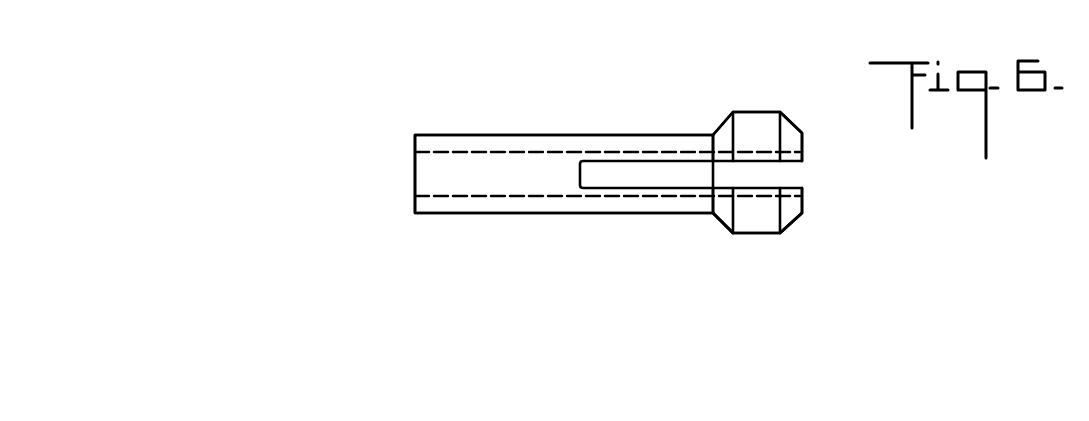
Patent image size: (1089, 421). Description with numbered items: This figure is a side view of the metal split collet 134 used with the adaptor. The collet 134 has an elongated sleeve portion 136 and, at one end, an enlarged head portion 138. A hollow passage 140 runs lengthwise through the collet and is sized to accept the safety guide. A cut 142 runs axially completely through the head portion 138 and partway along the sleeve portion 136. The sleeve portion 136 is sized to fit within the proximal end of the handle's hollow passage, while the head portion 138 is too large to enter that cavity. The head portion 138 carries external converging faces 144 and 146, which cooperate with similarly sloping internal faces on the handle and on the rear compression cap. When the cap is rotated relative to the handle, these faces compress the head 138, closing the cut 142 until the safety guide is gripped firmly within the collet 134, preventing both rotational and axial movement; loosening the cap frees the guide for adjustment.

The split collet 134 is at (566, 124).
The sleeve portion 136 is at (508, 213).
The head portion 138 is at (742, 233).
The hollow passage 140 is at (470, 197).
The cut 142 is at (653, 160).
The external converging face 144 is at (720, 222).
The external converging face 146 is at (795, 222).